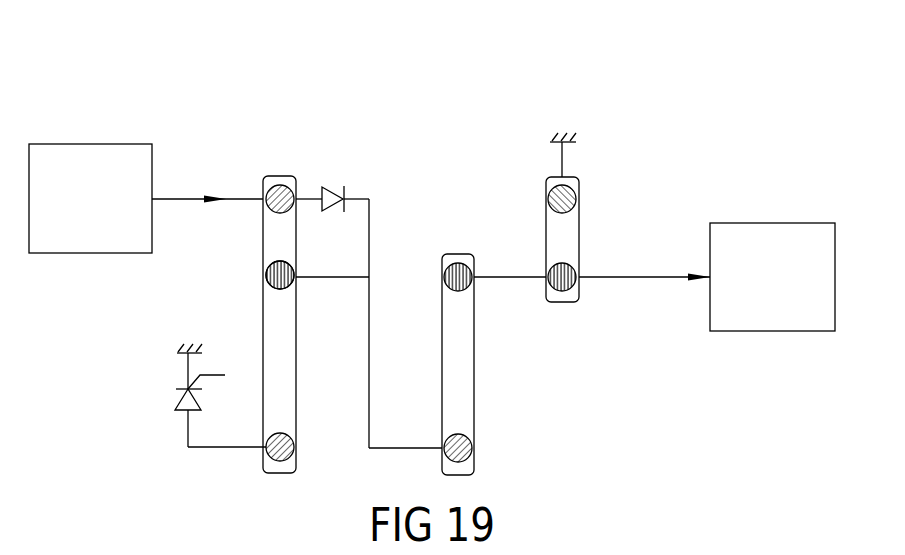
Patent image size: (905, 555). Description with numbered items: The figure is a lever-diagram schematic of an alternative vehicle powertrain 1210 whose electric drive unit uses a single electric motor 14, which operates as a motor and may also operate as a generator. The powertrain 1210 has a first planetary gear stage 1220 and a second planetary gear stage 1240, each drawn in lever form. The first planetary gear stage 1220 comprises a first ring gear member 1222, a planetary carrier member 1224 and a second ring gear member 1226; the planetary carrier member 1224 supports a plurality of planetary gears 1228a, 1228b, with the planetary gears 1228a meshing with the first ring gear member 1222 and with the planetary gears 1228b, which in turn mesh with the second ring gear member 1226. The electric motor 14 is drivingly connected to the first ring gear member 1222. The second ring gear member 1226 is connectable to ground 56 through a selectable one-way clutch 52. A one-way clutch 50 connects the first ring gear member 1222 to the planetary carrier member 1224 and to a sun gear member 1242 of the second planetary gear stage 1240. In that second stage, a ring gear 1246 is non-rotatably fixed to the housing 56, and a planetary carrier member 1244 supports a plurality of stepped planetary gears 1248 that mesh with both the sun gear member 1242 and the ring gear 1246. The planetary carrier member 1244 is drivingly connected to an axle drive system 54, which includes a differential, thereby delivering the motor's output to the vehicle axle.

The electric motor 14 is at (101, 210).
The axle drive system 54 is at (783, 288).
The one-way clutch 50 is at (331, 186).
The selectable one-way clutch 52 is at (180, 395).
The ground 56 is at (190, 348).
The powertrain 1210 is at (537, 78).
The first planetary gear stage 1220 is at (240, 138).
The first ring gear member 1222 is at (270, 188).
The planetary carrier member 1224 is at (357, 280).
The second ring gear member 1226 is at (290, 458).
The planetary gears 1228a is at (269, 286).
The planetary gears 1228b is at (280, 275).
The second planetary gear stage 1240 is at (477, 170).
The sun gear member 1242 is at (468, 457).
The planetary carrier member 1244 is at (538, 275).
The ring gear 1246 is at (572, 188).
The stepped planetary gears 1248 is at (466, 288).